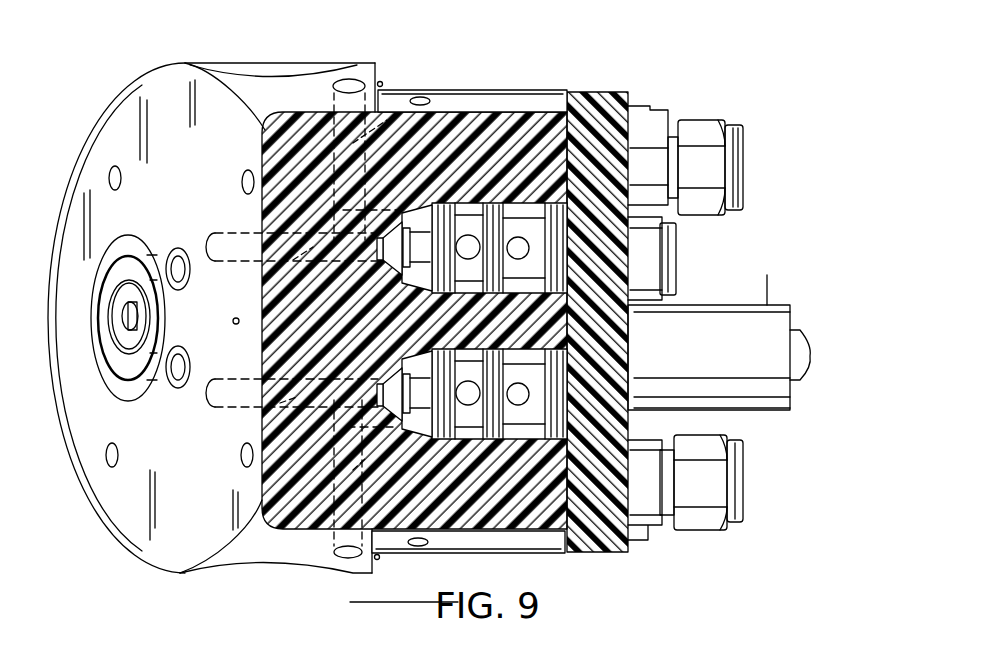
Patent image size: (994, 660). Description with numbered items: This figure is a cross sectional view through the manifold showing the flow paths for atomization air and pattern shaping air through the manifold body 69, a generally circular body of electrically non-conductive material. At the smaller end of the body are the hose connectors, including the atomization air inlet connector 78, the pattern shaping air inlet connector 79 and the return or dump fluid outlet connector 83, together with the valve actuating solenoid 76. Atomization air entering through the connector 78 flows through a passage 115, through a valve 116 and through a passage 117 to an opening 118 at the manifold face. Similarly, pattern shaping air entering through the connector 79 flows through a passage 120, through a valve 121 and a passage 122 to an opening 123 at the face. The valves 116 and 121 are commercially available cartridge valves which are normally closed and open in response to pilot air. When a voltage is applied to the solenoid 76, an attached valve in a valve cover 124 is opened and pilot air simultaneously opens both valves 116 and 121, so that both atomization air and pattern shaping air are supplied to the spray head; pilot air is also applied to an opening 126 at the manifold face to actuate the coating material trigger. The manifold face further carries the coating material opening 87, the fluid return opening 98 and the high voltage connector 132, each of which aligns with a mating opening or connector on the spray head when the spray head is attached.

The manifold body 69 is at (270, 566).
The valve actuating solenoid 76 is at (800, 330).
The atomization air inlet connector 78 is at (745, 155).
The pattern shaping air inlet connector 79 is at (743, 470).
The return or dump fluid outlet connector 83 is at (676, 252).
The coating material opening 87 is at (172, 388).
The fluid return opening 98 is at (178, 249).
The passage 115 is at (395, 95).
The valve 116 is at (472, 203).
The passage 117 is at (320, 263).
The opening 118 is at (214, 232).
The passage 120 is at (402, 533).
The valve 121 is at (518, 429).
The passage 122 is at (291, 406).
The opening 123 is at (213, 408).
The valve cover 124 is at (612, 553).
The opening 126 is at (234, 325).
The connector 132 is at (100, 380).